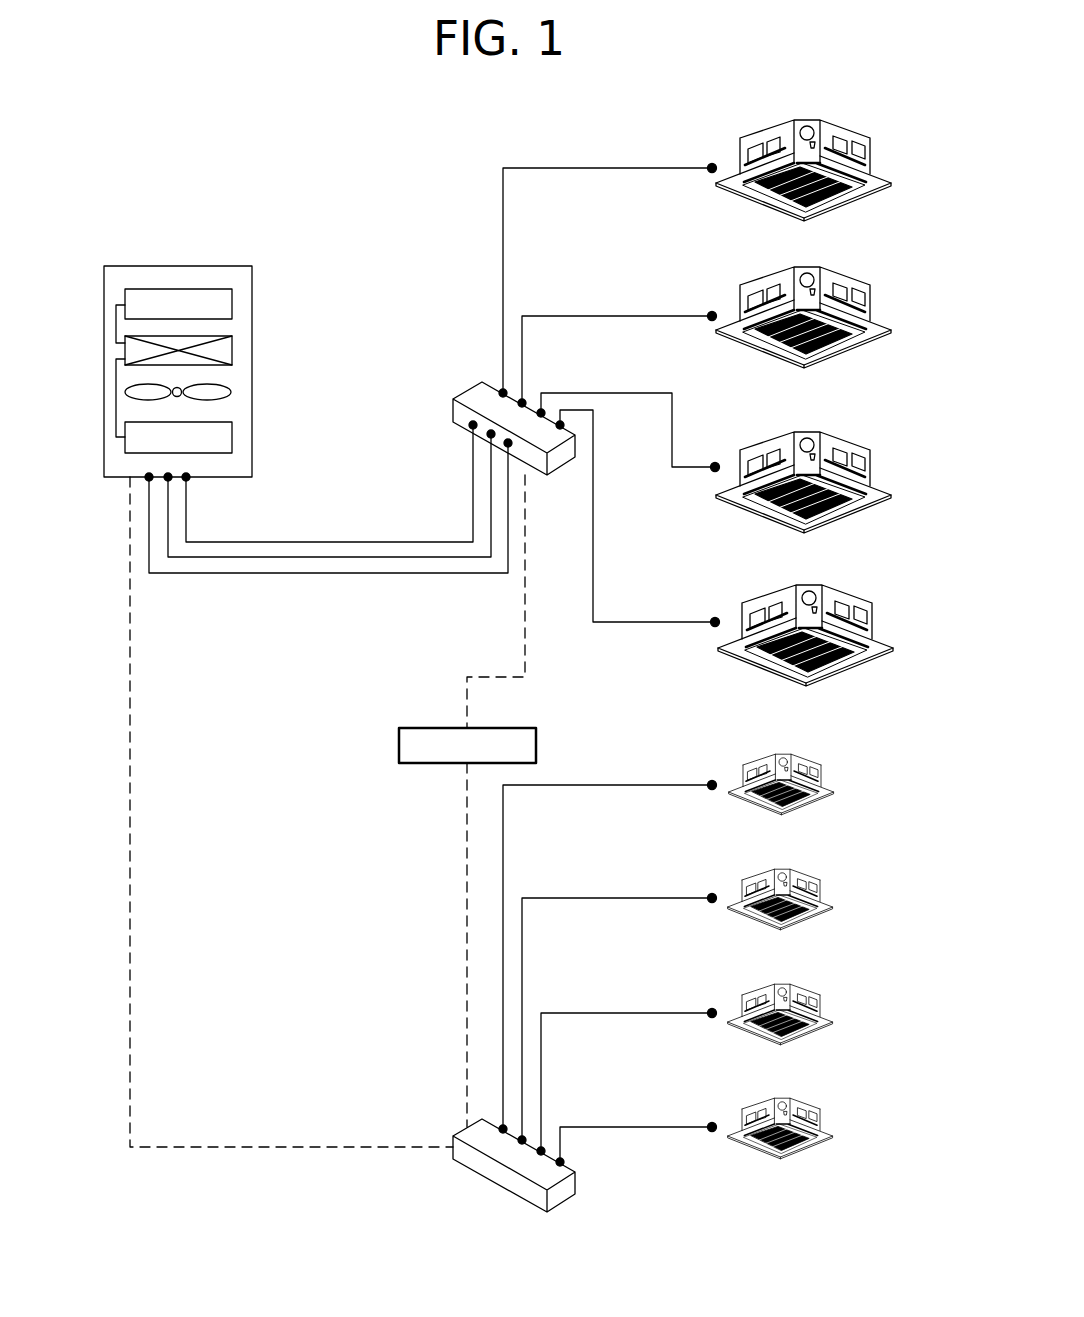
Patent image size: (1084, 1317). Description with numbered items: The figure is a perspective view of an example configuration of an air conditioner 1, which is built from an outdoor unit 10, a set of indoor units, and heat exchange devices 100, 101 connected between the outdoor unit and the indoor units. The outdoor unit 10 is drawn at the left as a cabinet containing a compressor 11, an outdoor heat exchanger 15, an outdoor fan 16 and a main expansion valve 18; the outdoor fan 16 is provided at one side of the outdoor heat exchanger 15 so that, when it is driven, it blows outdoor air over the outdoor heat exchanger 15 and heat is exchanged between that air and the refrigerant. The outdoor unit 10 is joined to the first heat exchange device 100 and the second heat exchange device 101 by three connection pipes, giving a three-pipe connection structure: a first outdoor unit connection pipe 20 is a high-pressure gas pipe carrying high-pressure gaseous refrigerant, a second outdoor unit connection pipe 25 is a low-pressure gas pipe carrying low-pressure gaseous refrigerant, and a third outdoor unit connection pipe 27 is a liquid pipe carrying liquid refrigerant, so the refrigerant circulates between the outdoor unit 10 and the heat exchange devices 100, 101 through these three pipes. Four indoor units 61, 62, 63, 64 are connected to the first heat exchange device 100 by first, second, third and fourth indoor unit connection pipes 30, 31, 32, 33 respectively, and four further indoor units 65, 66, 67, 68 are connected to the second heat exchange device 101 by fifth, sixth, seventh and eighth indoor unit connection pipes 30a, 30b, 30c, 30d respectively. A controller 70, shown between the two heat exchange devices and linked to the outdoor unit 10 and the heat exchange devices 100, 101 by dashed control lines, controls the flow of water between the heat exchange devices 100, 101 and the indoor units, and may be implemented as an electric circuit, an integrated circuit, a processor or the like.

The air conditioner 1 is at (470, 172).
The outdoor unit 10 is at (194, 250).
The compressor 11 is at (232, 304).
The outdoor heat exchanger 15 is at (232, 350).
The outdoor fan 16 is at (232, 392).
The main expansion valve 18 is at (232, 437).
The first outdoor unit connection pipe 20 is at (303, 542).
The second outdoor unit connection pipe 25 is at (333, 558).
The third outdoor unit connection pipe 27 is at (403, 573).
The first indoor unit connection pipe 30 is at (624, 167).
The second indoor unit connection pipe 31 is at (624, 315).
The third indoor unit connection pipe 32 is at (618, 394).
The fourth indoor unit connection pipe 33 is at (620, 623).
The fifth indoor unit connection pipe 30a is at (627, 784).
The sixth indoor unit connection pipe 30b is at (627, 897).
The seventh indoor unit connection pipe 30c is at (627, 1012).
The eighth indoor unit connection pipe 30d is at (627, 1126).
The indoor unit 61 is at (844, 193).
The indoor unit 62 is at (843, 347).
The indoor unit 63 is at (847, 508).
The indoor unit 64 is at (850, 663).
The indoor unit 65 is at (810, 803).
The indoor unit 66 is at (810, 918).
The indoor unit 67 is at (810, 1033).
The indoor unit 68 is at (810, 1147).
The controller 70 is at (399, 743).
The first heat exchange device 100 is at (450, 370).
The second heat exchange device 101 is at (448, 1105).